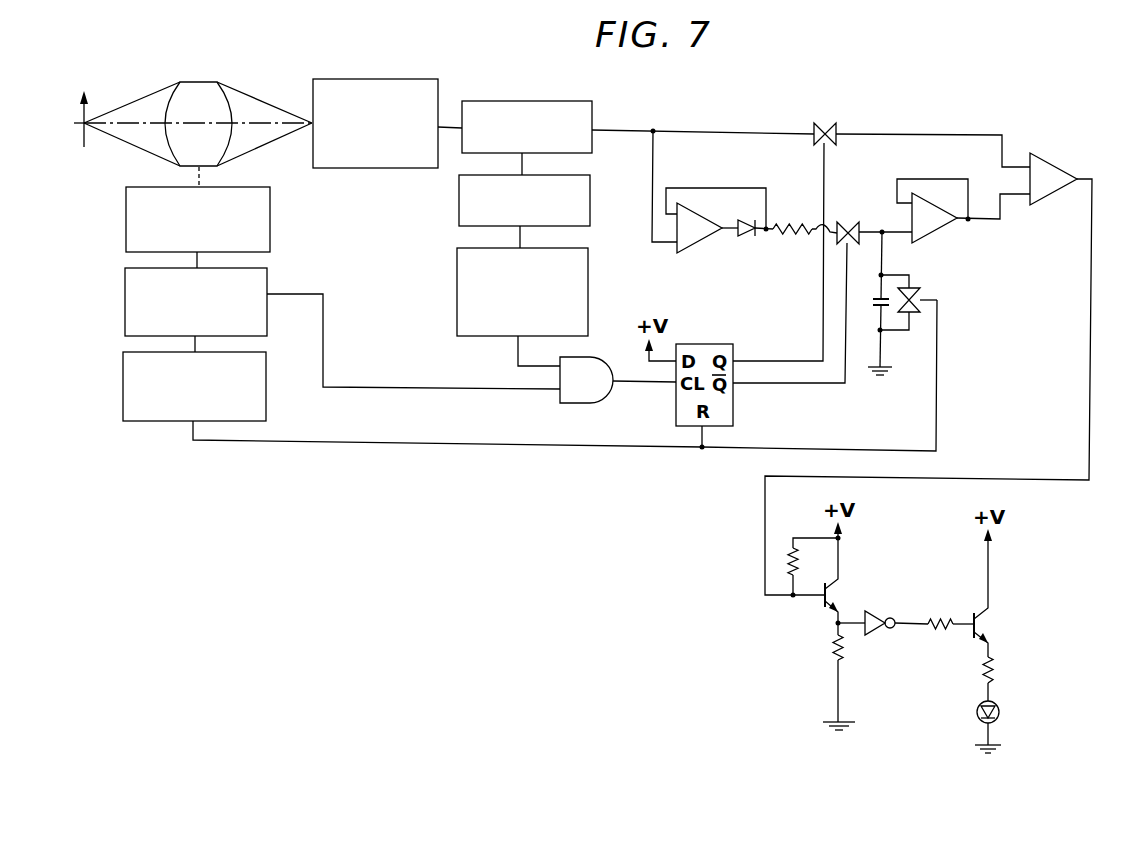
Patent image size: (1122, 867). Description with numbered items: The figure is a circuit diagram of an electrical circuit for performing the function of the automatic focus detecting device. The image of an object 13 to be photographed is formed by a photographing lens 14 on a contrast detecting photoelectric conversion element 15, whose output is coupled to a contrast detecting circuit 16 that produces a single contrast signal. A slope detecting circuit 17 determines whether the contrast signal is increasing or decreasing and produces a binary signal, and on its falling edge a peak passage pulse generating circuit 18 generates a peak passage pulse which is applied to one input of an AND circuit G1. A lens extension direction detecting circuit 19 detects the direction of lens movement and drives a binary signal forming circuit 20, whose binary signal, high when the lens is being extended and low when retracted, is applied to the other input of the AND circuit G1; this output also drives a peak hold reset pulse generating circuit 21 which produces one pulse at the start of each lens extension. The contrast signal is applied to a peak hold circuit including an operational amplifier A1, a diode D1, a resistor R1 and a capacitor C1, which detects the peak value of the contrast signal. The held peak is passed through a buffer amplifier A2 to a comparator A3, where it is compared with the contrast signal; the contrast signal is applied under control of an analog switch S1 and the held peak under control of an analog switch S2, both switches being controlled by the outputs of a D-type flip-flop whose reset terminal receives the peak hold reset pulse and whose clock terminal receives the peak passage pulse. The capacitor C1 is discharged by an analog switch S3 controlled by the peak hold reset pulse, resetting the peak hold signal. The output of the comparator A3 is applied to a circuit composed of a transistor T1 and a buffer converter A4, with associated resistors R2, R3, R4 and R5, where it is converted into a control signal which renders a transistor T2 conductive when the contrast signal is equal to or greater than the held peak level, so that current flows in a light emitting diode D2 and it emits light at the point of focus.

The object 13 is at (88, 107).
The photographing lens 14 is at (207, 90).
The photoelectric conversion element 15 is at (433, 88).
The contrast detecting circuit 16 is at (590, 108).
The slope detecting circuit 17 is at (583, 183).
The peak passage pulse generating circuit 18 is at (582, 272).
The lens extension direction detecting circuit 19 is at (264, 201).
The binary signal forming circuit 20 is at (262, 284).
The peak hold reset pulse generating circuit 21 is at (257, 369).
The AND circuit G1 is at (586, 380).
The analog switch S1 is at (824, 121).
The analog switch S2 is at (847, 219).
The analog switch S3 is at (911, 298).
The operational amplifier A1 is at (699, 228).
The buffer amplifier A2 is at (934, 218).
The comparator A3 is at (1053, 179).
The buffer converter A4 is at (872, 613).
The diode D1 is at (747, 214).
The light emitting diode D2 is at (1002, 722).
The resistor R1 is at (805, 215).
The second resistor R2 is at (813, 566).
The third resistor R3 is at (824, 672).
The fourth resistor R4 is at (948, 612).
The fifth resistor R5 is at (999, 679).
The capacitor C1 is at (870, 299).
The transistor T1 is at (845, 580).
The transistor T2 is at (993, 596).